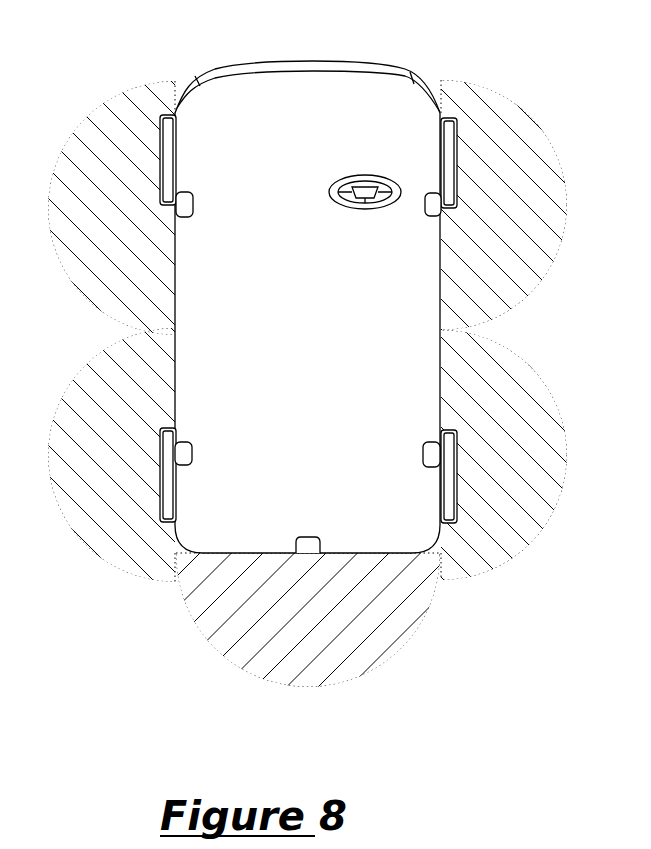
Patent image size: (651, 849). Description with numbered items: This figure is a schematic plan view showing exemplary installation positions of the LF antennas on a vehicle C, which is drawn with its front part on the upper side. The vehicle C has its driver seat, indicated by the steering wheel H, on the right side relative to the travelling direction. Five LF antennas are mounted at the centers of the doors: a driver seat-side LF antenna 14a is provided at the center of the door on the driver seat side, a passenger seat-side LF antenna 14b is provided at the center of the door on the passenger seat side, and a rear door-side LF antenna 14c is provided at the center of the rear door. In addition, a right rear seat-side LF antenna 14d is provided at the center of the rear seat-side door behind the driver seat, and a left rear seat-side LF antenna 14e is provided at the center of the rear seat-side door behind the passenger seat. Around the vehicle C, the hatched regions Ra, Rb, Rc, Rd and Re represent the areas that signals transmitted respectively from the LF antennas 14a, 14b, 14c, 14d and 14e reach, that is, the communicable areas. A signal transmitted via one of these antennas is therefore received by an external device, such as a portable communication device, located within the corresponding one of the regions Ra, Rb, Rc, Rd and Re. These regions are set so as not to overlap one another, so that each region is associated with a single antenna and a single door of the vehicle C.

The vehicle C is at (357, 63).
The steering wheel H is at (363, 175).
The driver seat-side LF antenna 14a is at (430, 216).
The passenger seat-side LF antenna 14b is at (194, 205).
The rear door-side LF antenna 14c is at (306, 537).
The right rear seat-side LF antenna 14d is at (423, 458).
The left rear seat-side LF antenna 14e is at (193, 455).
The hatched region Ra is at (535, 118).
The hatched region Rb is at (102, 103).
The hatched region Rc is at (360, 673).
The hatched region Rd is at (557, 400).
The hatched region Re is at (73, 380).